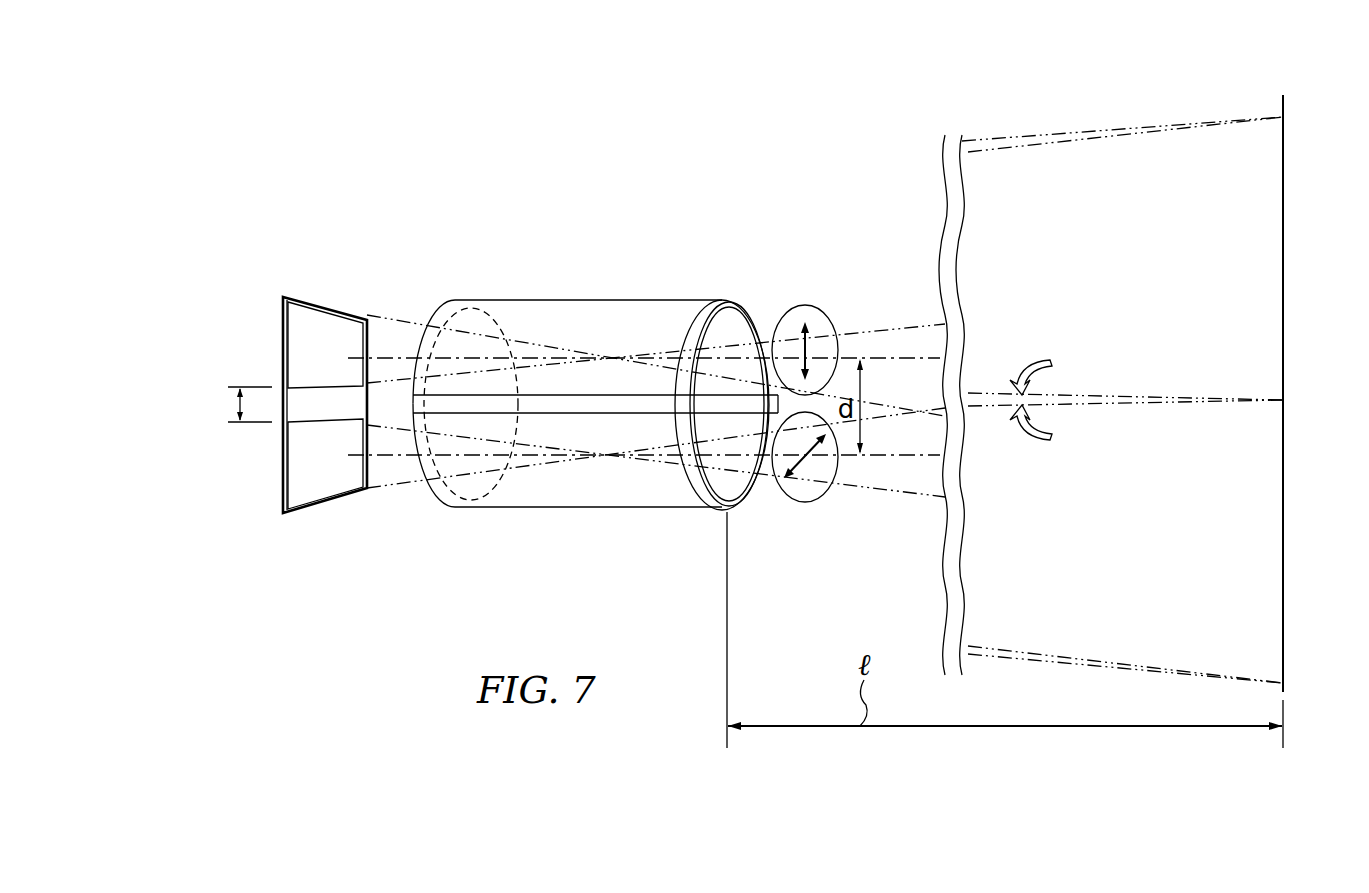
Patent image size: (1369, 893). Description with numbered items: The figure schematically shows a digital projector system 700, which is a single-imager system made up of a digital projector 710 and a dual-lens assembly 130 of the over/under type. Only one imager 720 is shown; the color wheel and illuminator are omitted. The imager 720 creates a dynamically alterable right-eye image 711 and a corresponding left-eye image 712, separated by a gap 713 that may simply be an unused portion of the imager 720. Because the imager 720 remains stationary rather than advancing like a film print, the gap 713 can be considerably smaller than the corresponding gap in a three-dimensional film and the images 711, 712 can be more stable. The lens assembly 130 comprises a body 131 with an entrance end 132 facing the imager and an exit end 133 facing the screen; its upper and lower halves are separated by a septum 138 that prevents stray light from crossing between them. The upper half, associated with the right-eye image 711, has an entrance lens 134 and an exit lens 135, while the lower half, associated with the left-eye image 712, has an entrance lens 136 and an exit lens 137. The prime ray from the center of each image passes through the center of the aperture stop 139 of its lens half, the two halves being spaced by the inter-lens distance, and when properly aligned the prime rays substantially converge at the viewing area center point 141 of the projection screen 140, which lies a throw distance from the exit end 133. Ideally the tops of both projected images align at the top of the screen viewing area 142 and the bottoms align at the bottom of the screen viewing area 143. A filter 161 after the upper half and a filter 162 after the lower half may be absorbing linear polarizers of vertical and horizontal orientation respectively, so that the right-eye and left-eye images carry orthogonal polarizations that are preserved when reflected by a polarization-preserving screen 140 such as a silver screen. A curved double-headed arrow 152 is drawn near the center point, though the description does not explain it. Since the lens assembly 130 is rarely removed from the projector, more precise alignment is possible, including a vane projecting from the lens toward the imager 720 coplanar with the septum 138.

The digital projector system 700 is at (343, 180).
The digital projector 710 is at (336, 535).
The imager 720 is at (283, 297).
The right-eye image 711 is at (290, 345).
The left-eye image 712 is at (290, 475).
The gap 713 is at (230, 408).
The dual-lens assembly 130 is at (550, 177).
The body 131 is at (548, 298).
The entrance end 132 is at (440, 312).
The entrance lens 134 is at (468, 300).
The entrance lens 136 is at (460, 505).
The septum 138 is at (580, 395).
The aperture stop 139 is at (612, 356).
The exit end 133 is at (683, 330).
The exit lens 135 is at (722, 303).
The exit lens 137 is at (705, 496).
The filter 161 is at (812, 308).
The filter 162 is at (795, 500).
The projection screen 140 is at (1285, 258).
The viewing area center point 141 is at (1282, 382).
The top of the screen viewing area 142 is at (1282, 114).
The bottom of the screen viewing area 143 is at (1282, 683).
The rotation direction 152 is at (1040, 360).